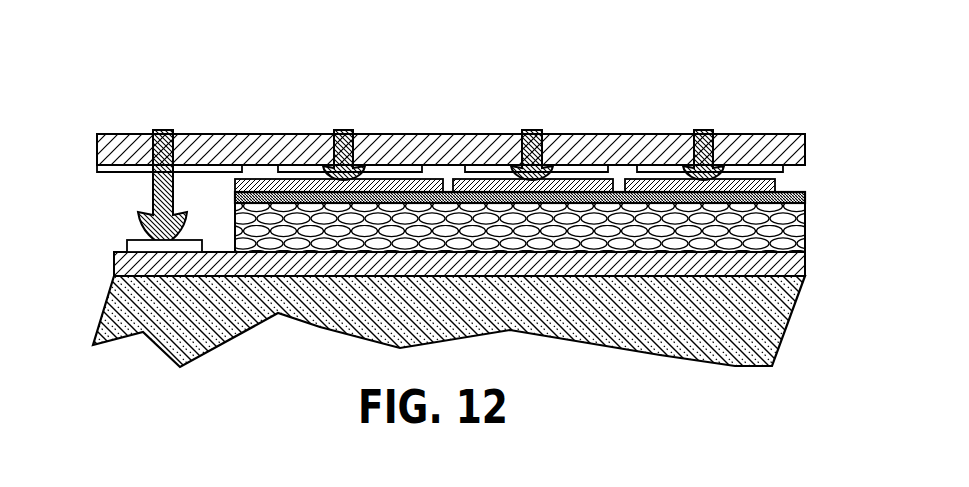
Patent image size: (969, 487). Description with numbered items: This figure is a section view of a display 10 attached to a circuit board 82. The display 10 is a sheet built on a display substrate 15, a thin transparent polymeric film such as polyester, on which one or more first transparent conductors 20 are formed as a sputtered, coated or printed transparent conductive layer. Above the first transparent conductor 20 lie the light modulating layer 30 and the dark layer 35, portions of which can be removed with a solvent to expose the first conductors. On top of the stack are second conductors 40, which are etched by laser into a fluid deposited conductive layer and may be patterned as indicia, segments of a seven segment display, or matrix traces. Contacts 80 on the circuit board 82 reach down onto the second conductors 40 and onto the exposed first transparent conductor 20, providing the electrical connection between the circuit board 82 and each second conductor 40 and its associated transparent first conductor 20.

The display 10 is at (130, 54).
The display substrate 15 is at (793, 320).
The first transparent conductor 20 is at (805, 272).
The light modulating layer 30 is at (805, 235).
The dark layer 35 is at (805, 193).
The second conductor 40 is at (428, 179).
The contact 80 is at (161, 130).
The circuit board 82 is at (97, 153).